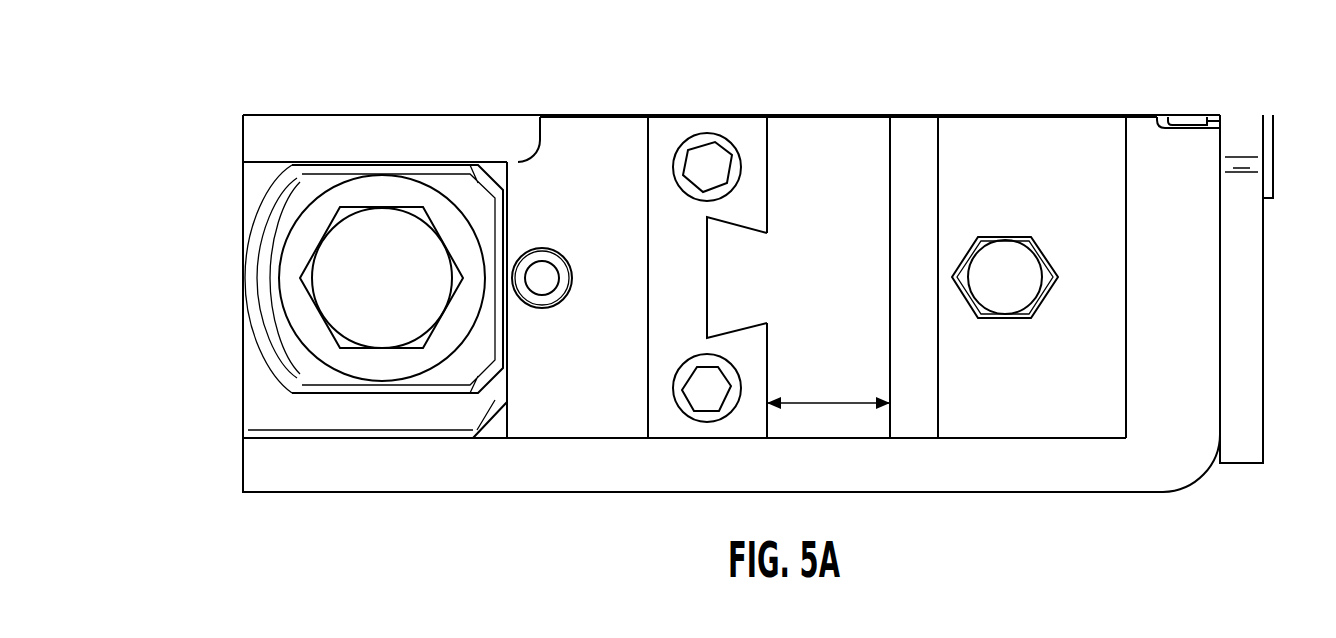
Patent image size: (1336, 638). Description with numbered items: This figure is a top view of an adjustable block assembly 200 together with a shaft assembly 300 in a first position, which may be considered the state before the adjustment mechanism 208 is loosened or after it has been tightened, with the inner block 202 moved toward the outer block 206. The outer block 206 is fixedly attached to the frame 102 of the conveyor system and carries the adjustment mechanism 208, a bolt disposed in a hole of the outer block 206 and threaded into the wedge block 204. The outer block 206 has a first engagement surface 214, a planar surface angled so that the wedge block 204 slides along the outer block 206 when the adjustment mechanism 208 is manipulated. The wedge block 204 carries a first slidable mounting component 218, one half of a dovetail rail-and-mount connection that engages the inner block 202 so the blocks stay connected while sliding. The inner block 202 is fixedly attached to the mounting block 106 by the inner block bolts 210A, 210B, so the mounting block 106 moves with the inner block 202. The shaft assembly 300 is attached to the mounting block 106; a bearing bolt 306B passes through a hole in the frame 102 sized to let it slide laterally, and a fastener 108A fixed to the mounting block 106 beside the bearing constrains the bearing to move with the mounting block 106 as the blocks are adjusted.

The frame 102 is at (310, 468).
The mounting block 106 is at (570, 183).
The fastener 108A is at (545, 257).
The adjustable block assembly 200 is at (1104, 142).
The inner block 202 is at (665, 215).
The wedge block 204 is at (875, 213).
The outer block 206 is at (1037, 368).
The adjustment mechanism 208 is at (1013, 267).
The inner block bolt 210A is at (715, 390).
The inner block bolt 210B is at (707, 163).
The first engagement surface 214 is at (927, 228).
The first slidable mounting component 218 is at (728, 273).
The shaft assembly 300 is at (256, 224).
The bearing bolt 306B is at (365, 290).